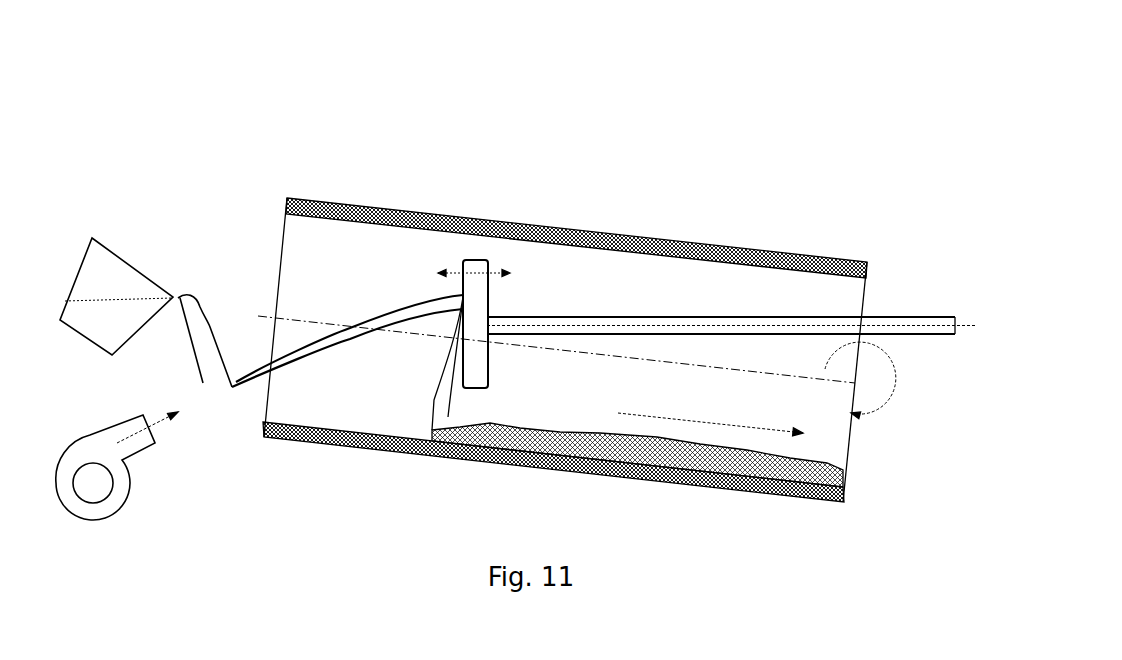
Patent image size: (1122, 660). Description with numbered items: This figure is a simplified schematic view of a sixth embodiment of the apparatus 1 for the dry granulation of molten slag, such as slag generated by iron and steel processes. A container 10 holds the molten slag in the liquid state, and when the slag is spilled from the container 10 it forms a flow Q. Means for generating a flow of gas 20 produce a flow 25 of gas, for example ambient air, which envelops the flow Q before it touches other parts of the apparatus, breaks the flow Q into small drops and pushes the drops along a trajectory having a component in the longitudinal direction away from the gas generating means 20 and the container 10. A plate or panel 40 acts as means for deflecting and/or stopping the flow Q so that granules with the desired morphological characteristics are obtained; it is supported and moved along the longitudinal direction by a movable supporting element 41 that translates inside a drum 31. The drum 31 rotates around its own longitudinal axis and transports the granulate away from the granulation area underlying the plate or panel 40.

The apparatus 1 is at (820, 228).
The drum 31 is at (433, 213).
The movable supporting element 41 is at (603, 317).
The plate or panel 40 is at (478, 259).
The container 10 is at (137, 268).
The flow of slag Q is at (213, 328).
The means for generating a flow of gas 20 is at (112, 517).
The flow of gas 25 is at (130, 437).